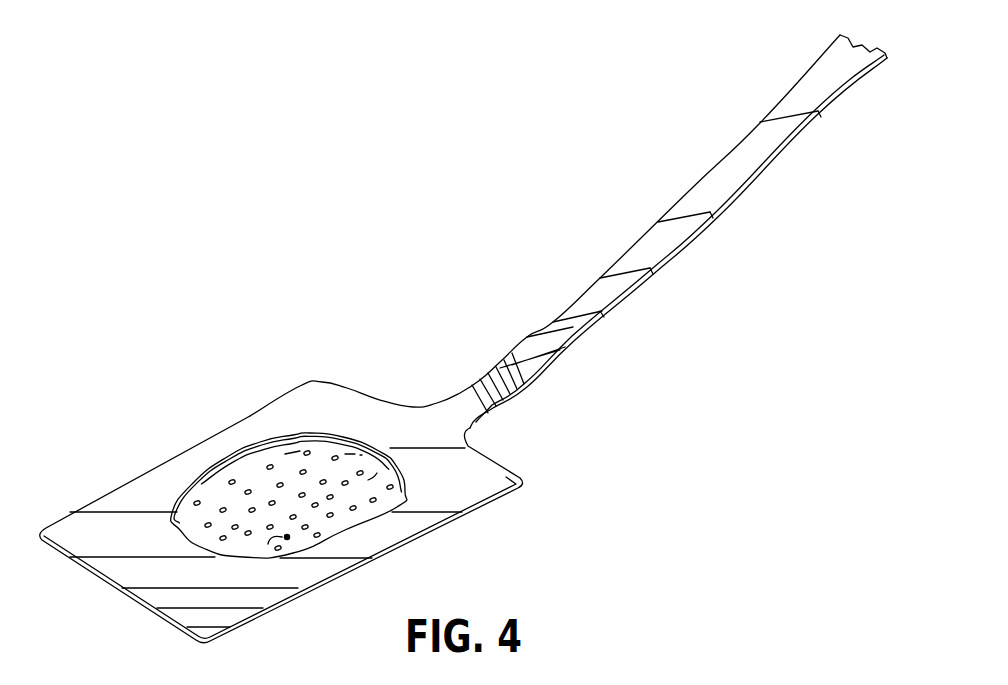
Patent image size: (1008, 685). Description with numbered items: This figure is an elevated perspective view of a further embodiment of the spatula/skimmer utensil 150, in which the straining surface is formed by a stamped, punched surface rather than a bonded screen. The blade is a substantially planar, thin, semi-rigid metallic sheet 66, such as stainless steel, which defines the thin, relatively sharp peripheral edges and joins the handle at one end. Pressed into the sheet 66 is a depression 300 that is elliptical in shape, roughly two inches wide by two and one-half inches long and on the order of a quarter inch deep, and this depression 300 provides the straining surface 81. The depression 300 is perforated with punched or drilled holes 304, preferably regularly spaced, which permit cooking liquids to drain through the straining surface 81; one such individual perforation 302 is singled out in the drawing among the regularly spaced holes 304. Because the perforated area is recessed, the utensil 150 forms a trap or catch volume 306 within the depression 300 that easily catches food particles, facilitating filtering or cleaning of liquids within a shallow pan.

The spatula/skimmer utensil 150 is at (597, 385).
The sheet 66 is at (457, 491).
The straining surface 81 is at (262, 476).
The depression 300 is at (318, 471).
The hole 302 is at (287, 537).
The holes 304 is at (365, 465).
The trap or catch volume 306 is at (210, 495).